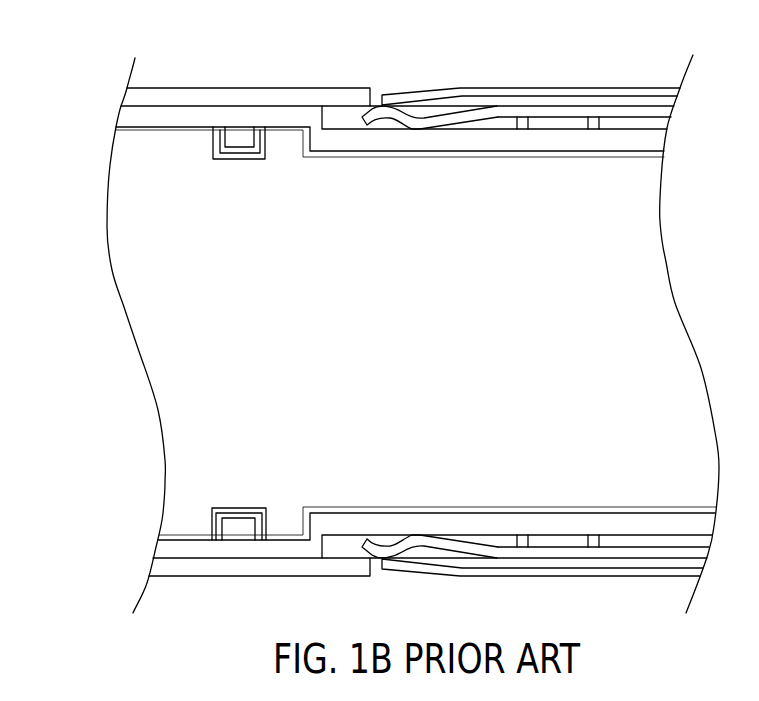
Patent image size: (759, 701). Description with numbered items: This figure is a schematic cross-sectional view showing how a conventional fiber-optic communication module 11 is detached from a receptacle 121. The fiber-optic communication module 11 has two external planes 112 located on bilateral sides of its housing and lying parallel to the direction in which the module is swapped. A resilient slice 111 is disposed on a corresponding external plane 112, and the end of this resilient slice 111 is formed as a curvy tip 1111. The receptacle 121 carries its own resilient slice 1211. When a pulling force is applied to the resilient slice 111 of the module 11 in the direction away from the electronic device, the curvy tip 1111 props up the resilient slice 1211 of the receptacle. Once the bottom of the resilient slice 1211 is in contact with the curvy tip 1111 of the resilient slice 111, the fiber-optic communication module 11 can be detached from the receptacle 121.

The fiber-optic communication module 11 is at (132, 263).
The resilient slice 111 is at (545, 112).
The curvy tip 1111 is at (378, 110).
The external plane 112 is at (480, 129).
The receptacle 121 is at (240, 98).
The resilient slice 1211 is at (415, 97).